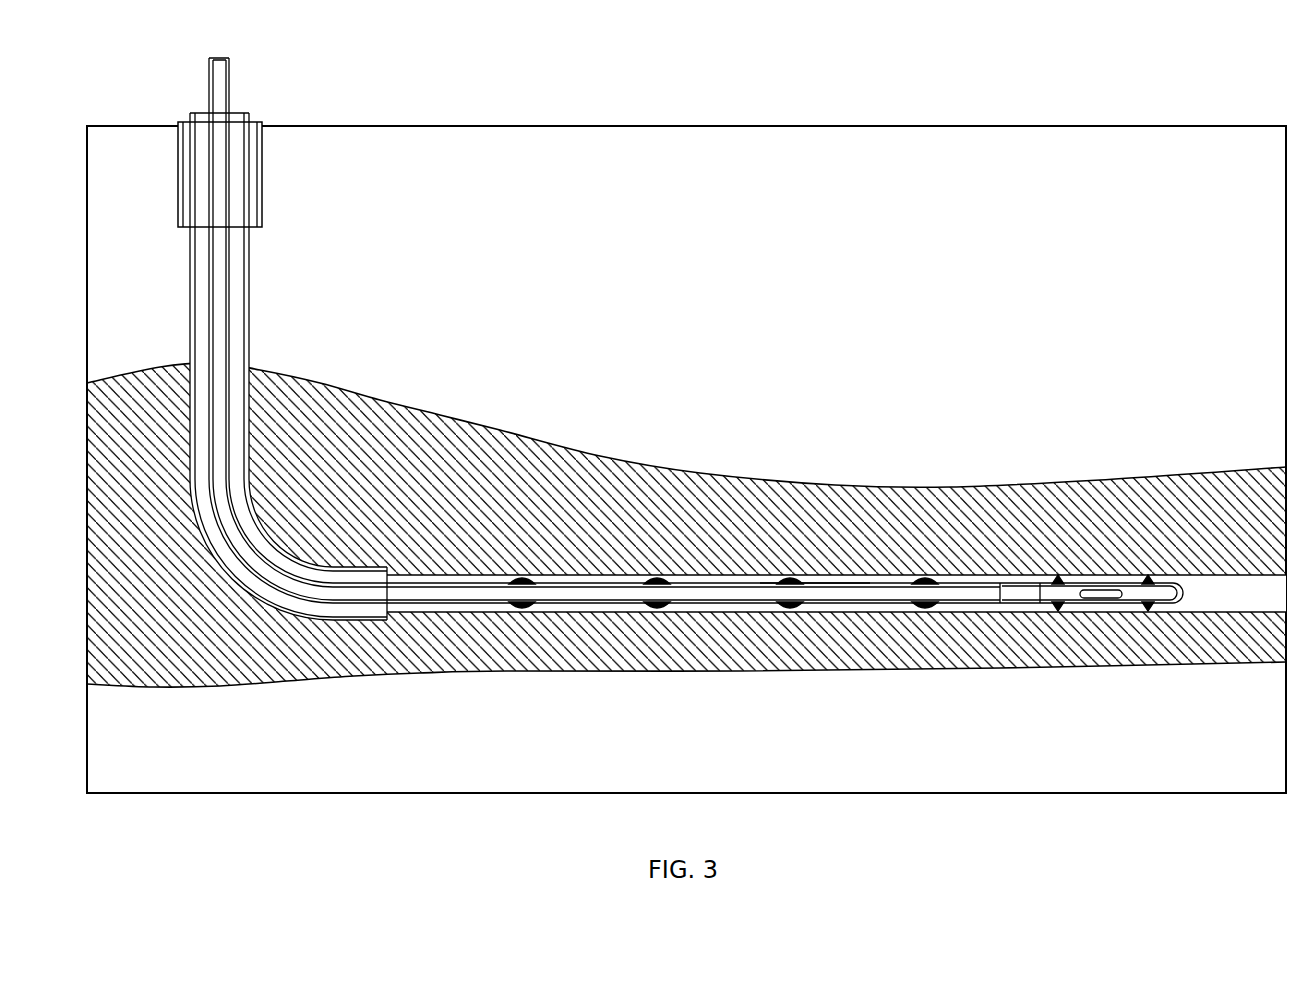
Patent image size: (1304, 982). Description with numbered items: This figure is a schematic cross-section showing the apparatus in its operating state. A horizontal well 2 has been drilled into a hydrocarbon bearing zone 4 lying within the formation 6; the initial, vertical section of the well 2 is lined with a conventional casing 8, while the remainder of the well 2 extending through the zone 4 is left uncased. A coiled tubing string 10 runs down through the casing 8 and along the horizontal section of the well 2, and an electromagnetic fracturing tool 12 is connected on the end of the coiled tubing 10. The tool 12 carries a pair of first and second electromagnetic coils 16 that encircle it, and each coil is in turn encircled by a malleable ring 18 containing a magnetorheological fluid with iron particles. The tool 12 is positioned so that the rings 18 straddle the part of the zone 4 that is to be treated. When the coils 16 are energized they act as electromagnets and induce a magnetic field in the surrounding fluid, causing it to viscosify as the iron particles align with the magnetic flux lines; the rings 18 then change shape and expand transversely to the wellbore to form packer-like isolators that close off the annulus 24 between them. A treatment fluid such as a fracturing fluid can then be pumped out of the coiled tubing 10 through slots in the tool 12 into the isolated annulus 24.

The horizontal well 2 is at (753, 613).
The hydrocarbon bearing zone 4 is at (882, 545).
The formation 6 is at (664, 299).
The casing 8 is at (282, 604).
The coiled tubing string 10 is at (230, 91).
The electromagnetic fracturing tool 12 is at (1090, 616).
The electromagnetic coils 16 is at (522, 582).
The malleable ring 18 is at (658, 582).
The annulus 24 is at (815, 578).